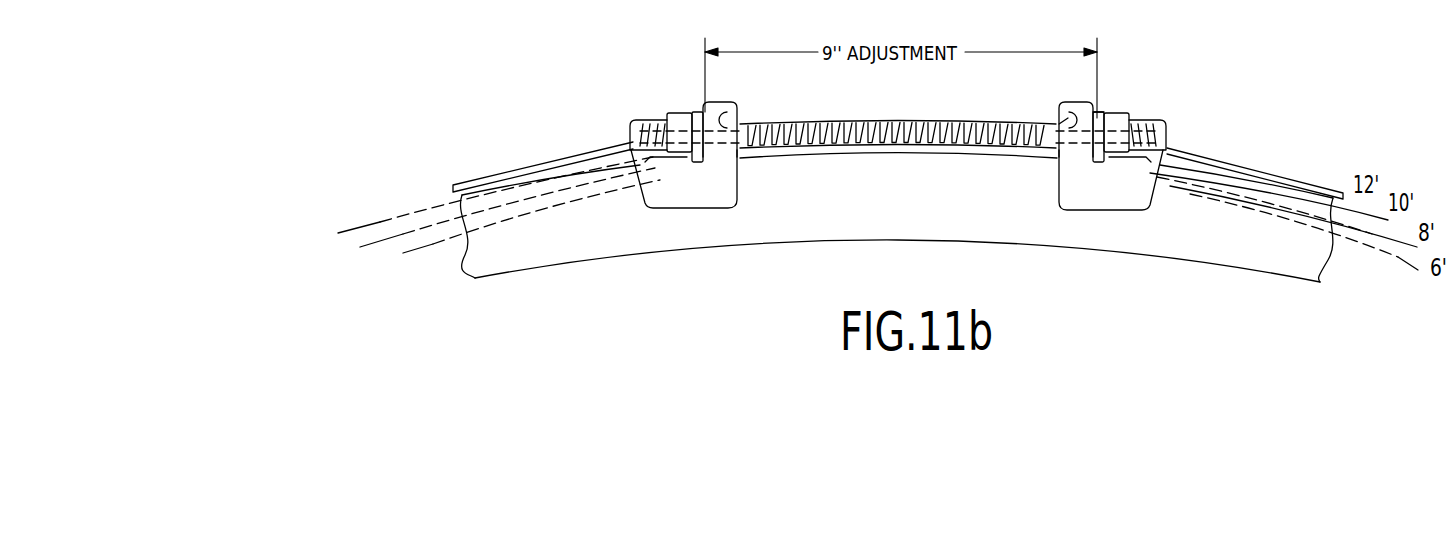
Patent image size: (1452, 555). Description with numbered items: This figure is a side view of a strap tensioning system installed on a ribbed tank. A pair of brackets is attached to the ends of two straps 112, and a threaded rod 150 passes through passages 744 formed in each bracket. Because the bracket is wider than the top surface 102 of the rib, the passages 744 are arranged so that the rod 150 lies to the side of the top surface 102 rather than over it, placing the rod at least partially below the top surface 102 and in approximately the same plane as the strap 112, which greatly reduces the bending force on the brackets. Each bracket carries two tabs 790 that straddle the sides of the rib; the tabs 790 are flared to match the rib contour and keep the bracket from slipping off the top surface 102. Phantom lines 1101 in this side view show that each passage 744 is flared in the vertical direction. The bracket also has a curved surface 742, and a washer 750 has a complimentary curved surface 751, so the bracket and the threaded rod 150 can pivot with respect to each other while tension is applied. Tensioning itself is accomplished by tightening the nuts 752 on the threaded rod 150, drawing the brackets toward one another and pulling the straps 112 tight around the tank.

The top surface 102 is at (577, 173).
The strap 112 is at (600, 152).
The threaded rod 150 is at (898, 123).
The curved surface 742 is at (1097, 107).
The passage 744 is at (1067, 122).
The washer 750 is at (697, 158).
The complimentary curved surface 751 is at (702, 110).
The nut 752 is at (677, 117).
The tab 790 is at (688, 210).
The phantom lines 1101 is at (727, 120).